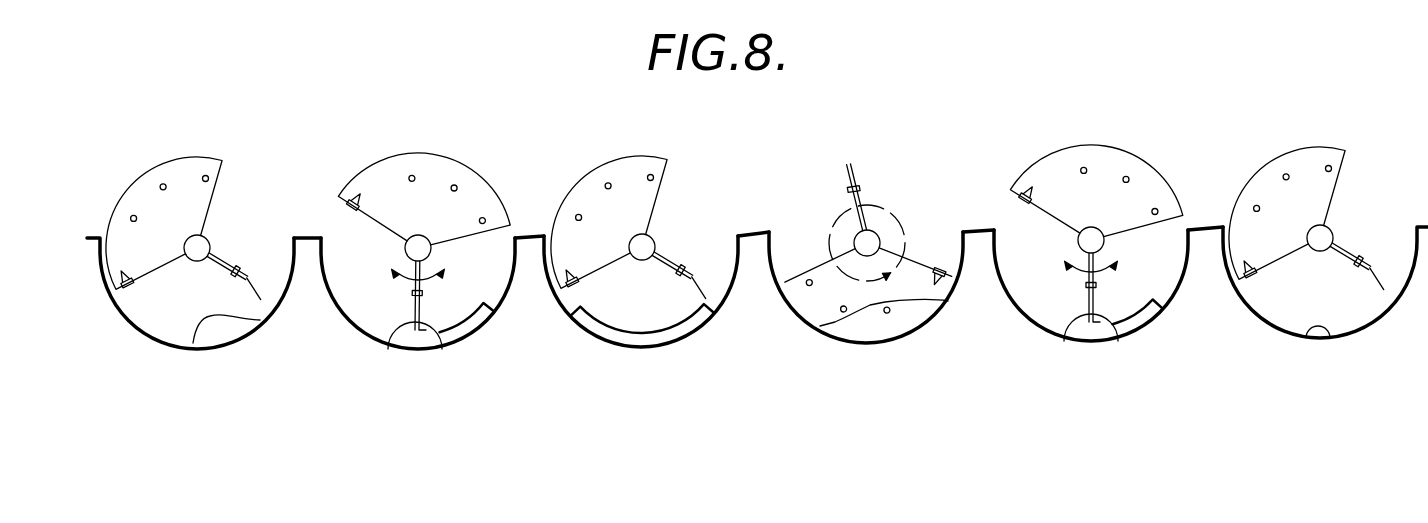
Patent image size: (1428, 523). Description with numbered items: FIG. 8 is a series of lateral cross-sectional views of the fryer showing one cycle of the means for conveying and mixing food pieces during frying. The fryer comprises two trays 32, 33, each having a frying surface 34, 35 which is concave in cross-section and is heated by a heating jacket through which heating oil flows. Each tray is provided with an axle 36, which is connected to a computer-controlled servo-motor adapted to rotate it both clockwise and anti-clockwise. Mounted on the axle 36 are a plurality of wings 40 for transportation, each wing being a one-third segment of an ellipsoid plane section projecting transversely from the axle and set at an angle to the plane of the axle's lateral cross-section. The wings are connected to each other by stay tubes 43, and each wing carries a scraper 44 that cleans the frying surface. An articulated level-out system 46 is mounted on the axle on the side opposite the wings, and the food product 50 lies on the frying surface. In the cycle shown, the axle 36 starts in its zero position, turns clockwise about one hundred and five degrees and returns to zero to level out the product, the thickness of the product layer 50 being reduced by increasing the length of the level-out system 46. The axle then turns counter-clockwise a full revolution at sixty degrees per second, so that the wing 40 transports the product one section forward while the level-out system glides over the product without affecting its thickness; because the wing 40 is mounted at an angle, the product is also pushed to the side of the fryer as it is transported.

The tray 32 is at (503, 303).
The tray 33 is at (1180, 297).
The frying surface 34 is at (160, 327).
The frying surface 35 is at (1332, 330).
The axle 36 is at (210, 247).
The wing 40 is at (207, 198).
The stay tube 43 is at (576, 215).
The scraper 44 is at (345, 201).
The articulated level-out system 46 is at (430, 340).
The product 50 is at (213, 333).